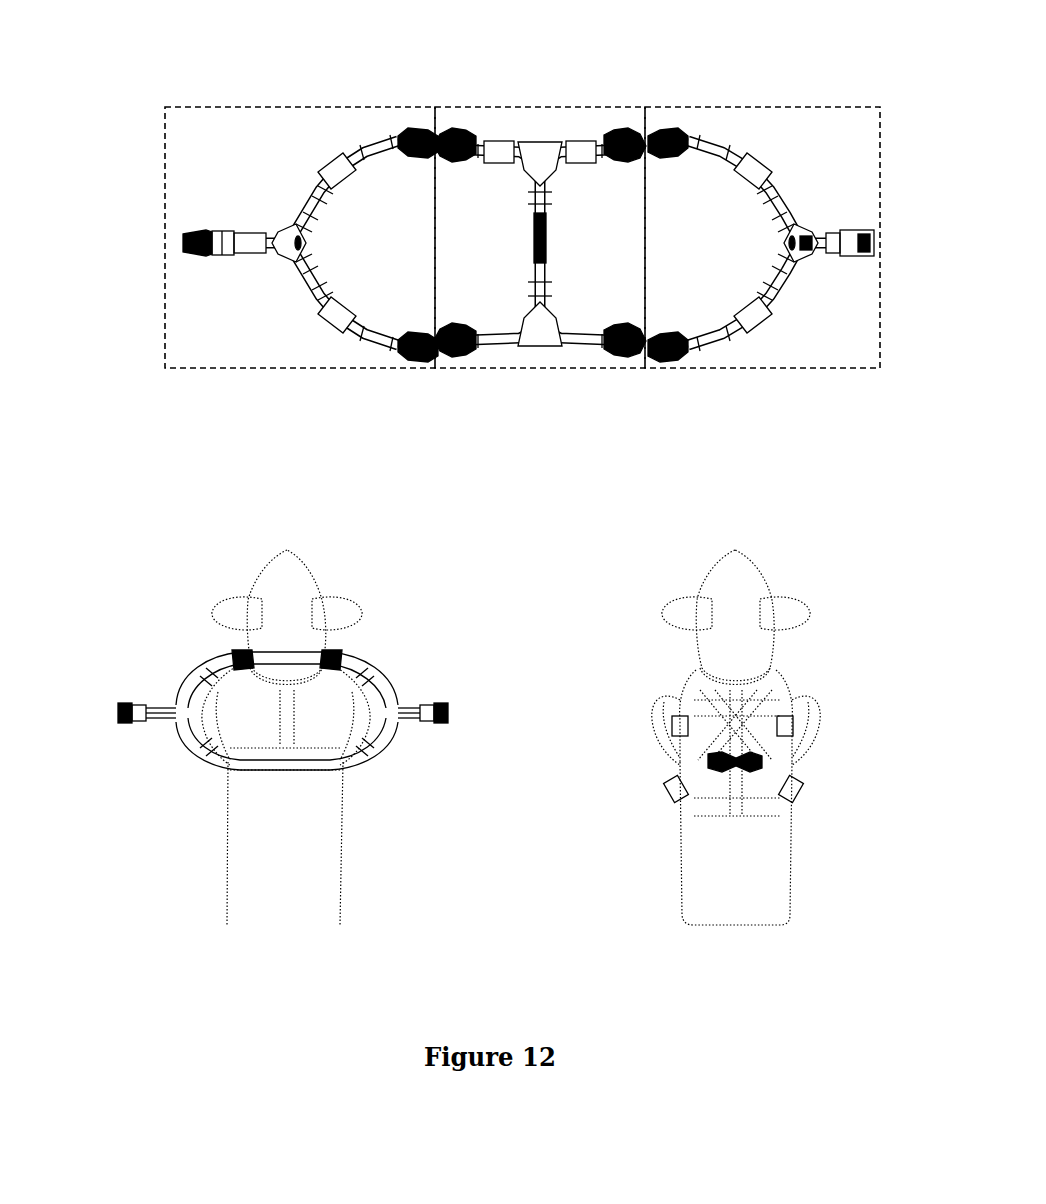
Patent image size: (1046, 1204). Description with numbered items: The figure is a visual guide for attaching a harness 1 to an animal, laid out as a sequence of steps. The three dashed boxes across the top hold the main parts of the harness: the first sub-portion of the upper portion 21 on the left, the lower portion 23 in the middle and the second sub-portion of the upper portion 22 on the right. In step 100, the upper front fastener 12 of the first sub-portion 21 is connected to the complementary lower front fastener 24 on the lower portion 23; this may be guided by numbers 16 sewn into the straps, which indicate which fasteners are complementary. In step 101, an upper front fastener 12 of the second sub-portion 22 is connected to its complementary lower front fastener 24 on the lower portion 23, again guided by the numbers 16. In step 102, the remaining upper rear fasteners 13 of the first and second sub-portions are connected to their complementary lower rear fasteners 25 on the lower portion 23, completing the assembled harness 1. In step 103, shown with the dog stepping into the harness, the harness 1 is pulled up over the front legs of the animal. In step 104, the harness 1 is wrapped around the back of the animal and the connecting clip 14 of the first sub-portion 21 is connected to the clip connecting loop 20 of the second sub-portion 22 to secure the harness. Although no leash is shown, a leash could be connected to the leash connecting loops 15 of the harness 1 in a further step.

The harness 1 is at (557, 107).
The upper front fastener 12 is at (412, 126).
The upper rear fastener 13 is at (402, 352).
The connecting clip 14 is at (122, 706).
The leash connecting loops 15 is at (758, 762).
The numbers 16 is at (505, 128).
The clip connecting loop 20 is at (447, 708).
The first sub-portion of the upper portion 21 is at (160, 346).
The second sub-portion of the upper portion 22 is at (882, 355).
The lower portion 23 is at (640, 364).
The lower front fastener 24 is at (628, 126).
The lower rear fastener 25 is at (652, 350).
The step 100 is at (146, 140).
The step 101 is at (828, 141).
The step 102 is at (458, 396).
The step 103 is at (152, 502).
The step 104 is at (618, 548).